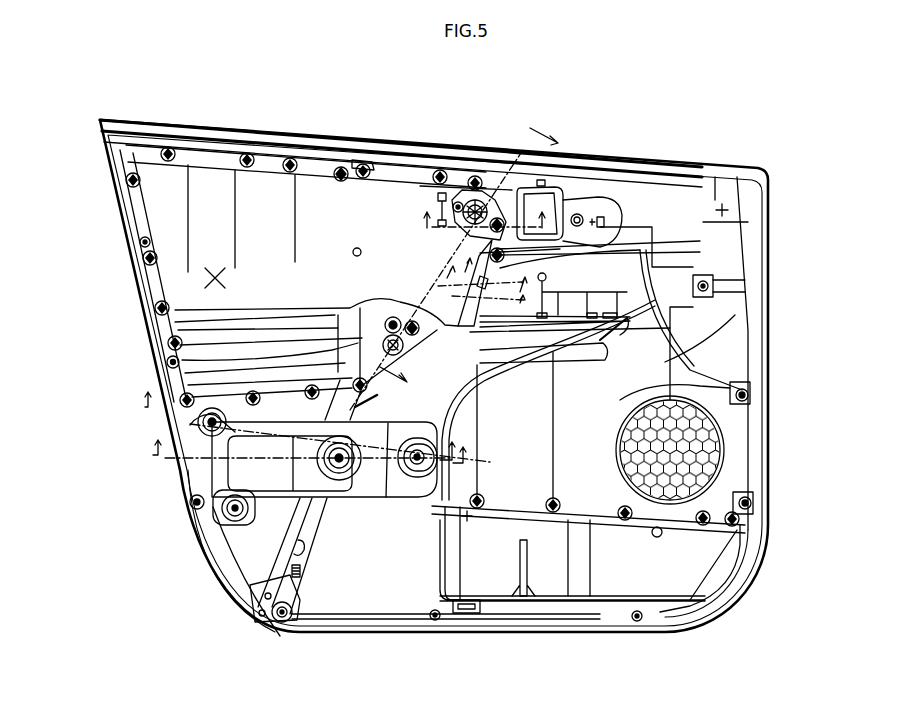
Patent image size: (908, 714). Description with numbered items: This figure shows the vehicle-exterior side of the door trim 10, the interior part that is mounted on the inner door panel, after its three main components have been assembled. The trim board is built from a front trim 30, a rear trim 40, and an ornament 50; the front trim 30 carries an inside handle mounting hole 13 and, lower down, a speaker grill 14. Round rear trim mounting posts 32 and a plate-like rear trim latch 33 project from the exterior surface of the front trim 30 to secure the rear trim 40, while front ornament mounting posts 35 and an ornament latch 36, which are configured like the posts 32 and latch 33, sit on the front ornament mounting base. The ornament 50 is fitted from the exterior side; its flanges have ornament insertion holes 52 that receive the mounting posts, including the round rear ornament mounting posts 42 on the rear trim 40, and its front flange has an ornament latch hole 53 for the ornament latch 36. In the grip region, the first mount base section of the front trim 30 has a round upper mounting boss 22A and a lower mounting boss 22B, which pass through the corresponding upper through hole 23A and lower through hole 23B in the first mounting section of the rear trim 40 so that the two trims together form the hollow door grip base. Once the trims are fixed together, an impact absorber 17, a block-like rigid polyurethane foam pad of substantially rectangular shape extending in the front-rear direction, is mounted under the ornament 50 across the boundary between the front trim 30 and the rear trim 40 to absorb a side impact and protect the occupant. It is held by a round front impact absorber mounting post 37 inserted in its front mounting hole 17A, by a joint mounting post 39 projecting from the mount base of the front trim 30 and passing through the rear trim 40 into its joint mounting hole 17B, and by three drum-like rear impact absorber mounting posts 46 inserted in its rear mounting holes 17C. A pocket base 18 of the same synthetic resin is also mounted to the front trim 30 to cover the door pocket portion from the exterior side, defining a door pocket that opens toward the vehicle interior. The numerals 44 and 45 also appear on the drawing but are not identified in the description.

The door trim 10 is at (82, 114).
The inside handle mounting hole 13 is at (562, 203).
The speaker grill 14 is at (730, 436).
The impact absorber 17 is at (285, 503).
The front mounting hole 17A is at (397, 423).
The joint mounting hole 17B is at (357, 462).
The rear mounting holes 17C is at (205, 426).
The pocket base 18 is at (575, 570).
The upper mounting boss 22A is at (477, 199).
The lower mounting boss 22B is at (166, 354).
The upper through hole 23A is at (457, 201).
The lower through hole 23B is at (177, 308).
The front trim 30 is at (663, 132).
The rear trim mounting posts 32 is at (337, 481).
The rear trim latch 33 is at (292, 617).
The front ornament mounting posts 35 is at (735, 315).
The ornament latch 36 is at (700, 252).
The front impact absorber mounting post 37 is at (462, 520).
The joint mounting post 39 is at (330, 478).
The rear trim 40 is at (172, 116).
The rear ornament mounting posts 42 is at (364, 160).
The lift arm 44 is at (250, 583).
The lower bolt 45 is at (282, 622).
The rear impact absorber mounting posts 46 is at (190, 423).
The ornament 50 is at (254, 194).
The ornament insertion holes 52 is at (341, 166).
The ornament latch hole 53 is at (592, 212).